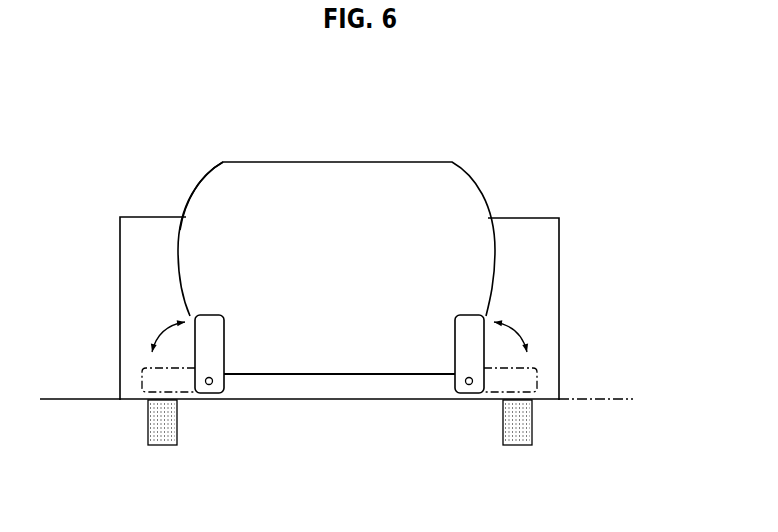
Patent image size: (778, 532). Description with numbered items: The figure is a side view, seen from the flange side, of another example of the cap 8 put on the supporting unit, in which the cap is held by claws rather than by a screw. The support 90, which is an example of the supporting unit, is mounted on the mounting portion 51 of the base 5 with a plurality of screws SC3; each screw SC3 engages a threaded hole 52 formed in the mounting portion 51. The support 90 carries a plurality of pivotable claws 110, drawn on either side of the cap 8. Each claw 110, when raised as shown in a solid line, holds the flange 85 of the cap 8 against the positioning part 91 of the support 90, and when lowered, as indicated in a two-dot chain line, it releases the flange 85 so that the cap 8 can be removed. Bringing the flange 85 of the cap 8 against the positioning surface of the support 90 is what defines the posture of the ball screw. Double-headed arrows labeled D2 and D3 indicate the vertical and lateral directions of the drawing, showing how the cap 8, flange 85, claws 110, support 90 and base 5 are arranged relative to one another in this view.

The cap 8 is at (284, 161).
The flange 85 is at (222, 162).
The support 90 is at (559, 218).
The positioning part 91 is at (136, 262).
The pivotable claw 110 is at (190, 318).
The mounting portion 51 is at (545, 392).
The base 5 is at (625, 398).
The threaded hole 52 is at (150, 420).
The screw SC3 is at (160, 448).
The vertical direction D2 is at (541, 87).
The lateral direction D3 is at (387, 461).